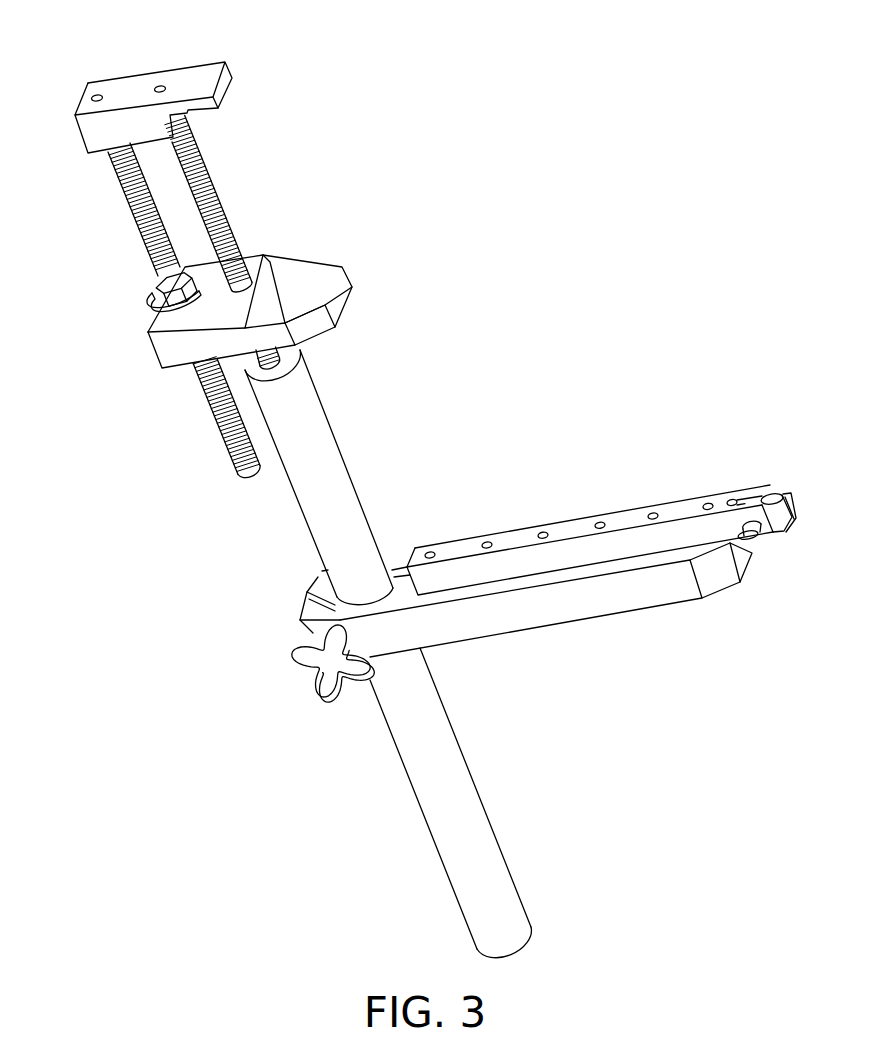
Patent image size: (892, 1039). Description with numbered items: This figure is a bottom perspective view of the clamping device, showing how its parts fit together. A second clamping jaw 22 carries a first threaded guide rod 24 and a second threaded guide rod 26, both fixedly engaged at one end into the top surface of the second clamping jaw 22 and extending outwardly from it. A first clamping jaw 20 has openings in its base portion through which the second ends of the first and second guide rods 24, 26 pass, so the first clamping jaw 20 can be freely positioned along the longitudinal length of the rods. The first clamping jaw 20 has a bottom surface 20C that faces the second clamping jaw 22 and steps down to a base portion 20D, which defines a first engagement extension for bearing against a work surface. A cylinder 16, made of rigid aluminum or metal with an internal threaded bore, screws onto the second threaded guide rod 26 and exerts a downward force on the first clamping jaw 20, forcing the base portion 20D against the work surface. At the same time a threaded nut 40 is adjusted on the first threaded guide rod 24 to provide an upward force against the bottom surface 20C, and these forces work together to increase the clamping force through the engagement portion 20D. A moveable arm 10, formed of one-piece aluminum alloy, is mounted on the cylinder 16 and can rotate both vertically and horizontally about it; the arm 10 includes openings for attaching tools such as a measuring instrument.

The moveable arm 10 is at (612, 613).
The cylinder 16 is at (345, 490).
The first clamping jaw 20 is at (257, 297).
The bottom surface 20C is at (170, 318).
The base portion 20D is at (292, 267).
The second clamping jaw 22 is at (249, 68).
The first threaded guide rod 24 is at (227, 452).
The second threaded guide rod 26 is at (217, 193).
The threaded nut 40 is at (158, 300).